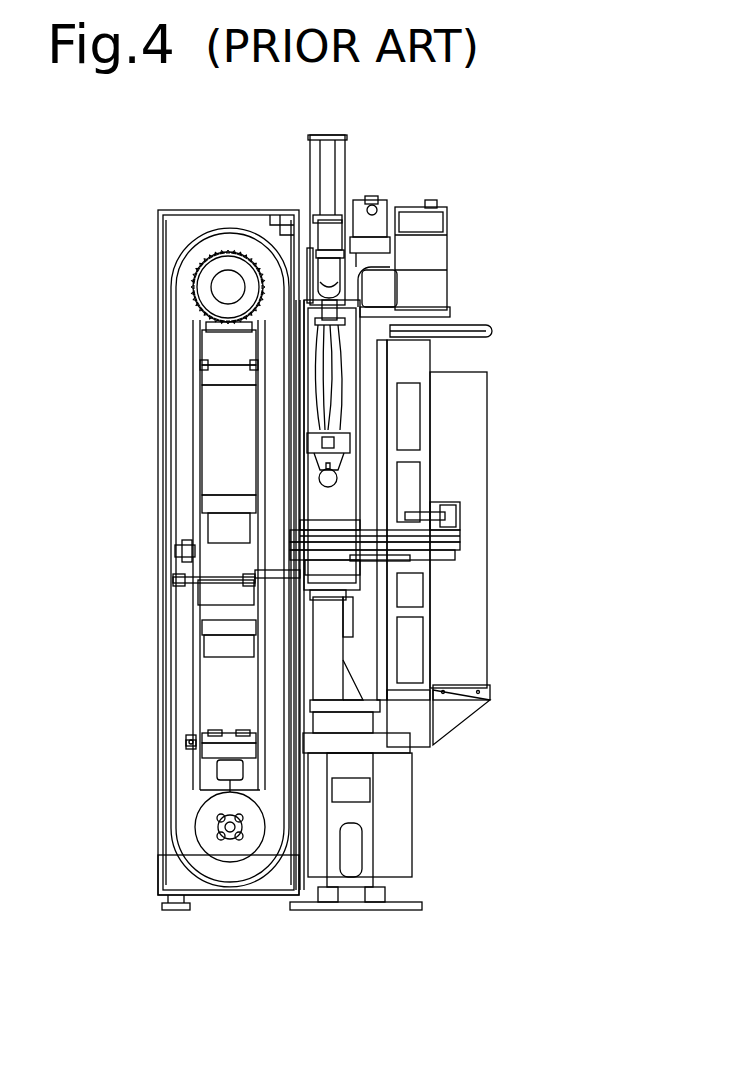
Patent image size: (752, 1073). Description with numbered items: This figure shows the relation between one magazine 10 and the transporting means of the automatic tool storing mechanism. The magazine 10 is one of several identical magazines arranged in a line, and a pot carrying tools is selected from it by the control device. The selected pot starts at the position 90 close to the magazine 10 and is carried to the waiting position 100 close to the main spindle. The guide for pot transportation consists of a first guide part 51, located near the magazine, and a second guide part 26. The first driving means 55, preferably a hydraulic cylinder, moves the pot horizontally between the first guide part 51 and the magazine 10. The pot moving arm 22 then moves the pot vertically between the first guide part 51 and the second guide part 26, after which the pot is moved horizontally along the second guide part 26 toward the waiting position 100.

The magazine 10 is at (163, 290).
The first guide part 51 is at (293, 548).
The position close to the magazine 90 is at (262, 563).
The first driving means 55 is at (223, 583).
The pot moving arm 22 is at (343, 432).
The second guide part 26 is at (452, 505).
The waiting position 100 is at (450, 553).